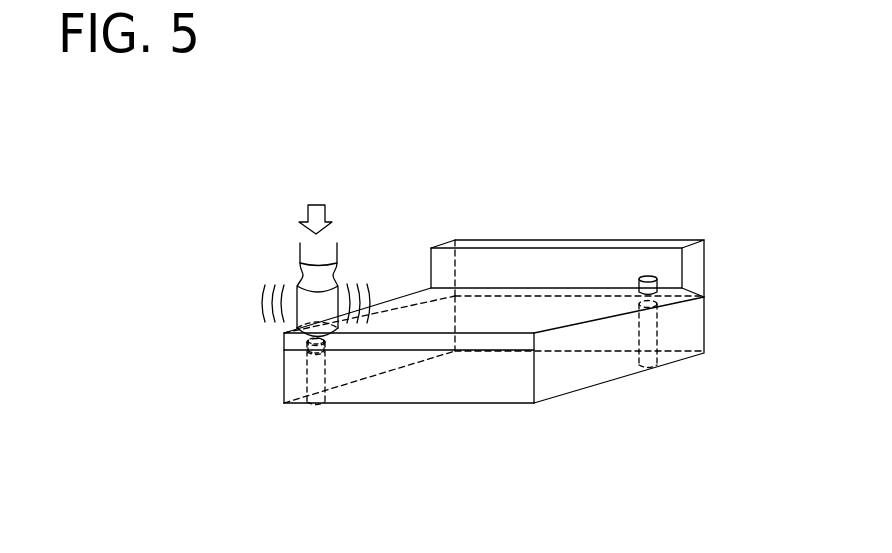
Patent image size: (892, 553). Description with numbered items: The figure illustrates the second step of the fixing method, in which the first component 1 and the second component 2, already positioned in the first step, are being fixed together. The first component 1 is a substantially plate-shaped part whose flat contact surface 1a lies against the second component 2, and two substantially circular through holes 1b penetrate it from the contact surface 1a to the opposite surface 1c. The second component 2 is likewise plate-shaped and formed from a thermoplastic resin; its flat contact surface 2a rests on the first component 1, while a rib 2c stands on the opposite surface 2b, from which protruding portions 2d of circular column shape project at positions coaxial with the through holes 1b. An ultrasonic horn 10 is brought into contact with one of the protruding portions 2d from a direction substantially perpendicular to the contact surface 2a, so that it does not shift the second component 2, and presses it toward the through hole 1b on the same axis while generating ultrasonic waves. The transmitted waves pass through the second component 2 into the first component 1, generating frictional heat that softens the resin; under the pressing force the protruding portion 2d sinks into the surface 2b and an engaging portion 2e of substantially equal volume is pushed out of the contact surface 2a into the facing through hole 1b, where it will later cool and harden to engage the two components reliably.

The first component 1 is at (413, 406).
The contact surface 1a is at (563, 336).
The through hole 1b is at (316, 403).
The surface 1c is at (500, 406).
The second component 2 is at (572, 242).
The contact surface 2a is at (676, 305).
The surface 2b is at (513, 308).
The rib 2c is at (692, 271).
The protruding portion 2d is at (645, 277).
The engaging portion 2e is at (306, 371).
The ultrasonic horn 10 is at (300, 271).